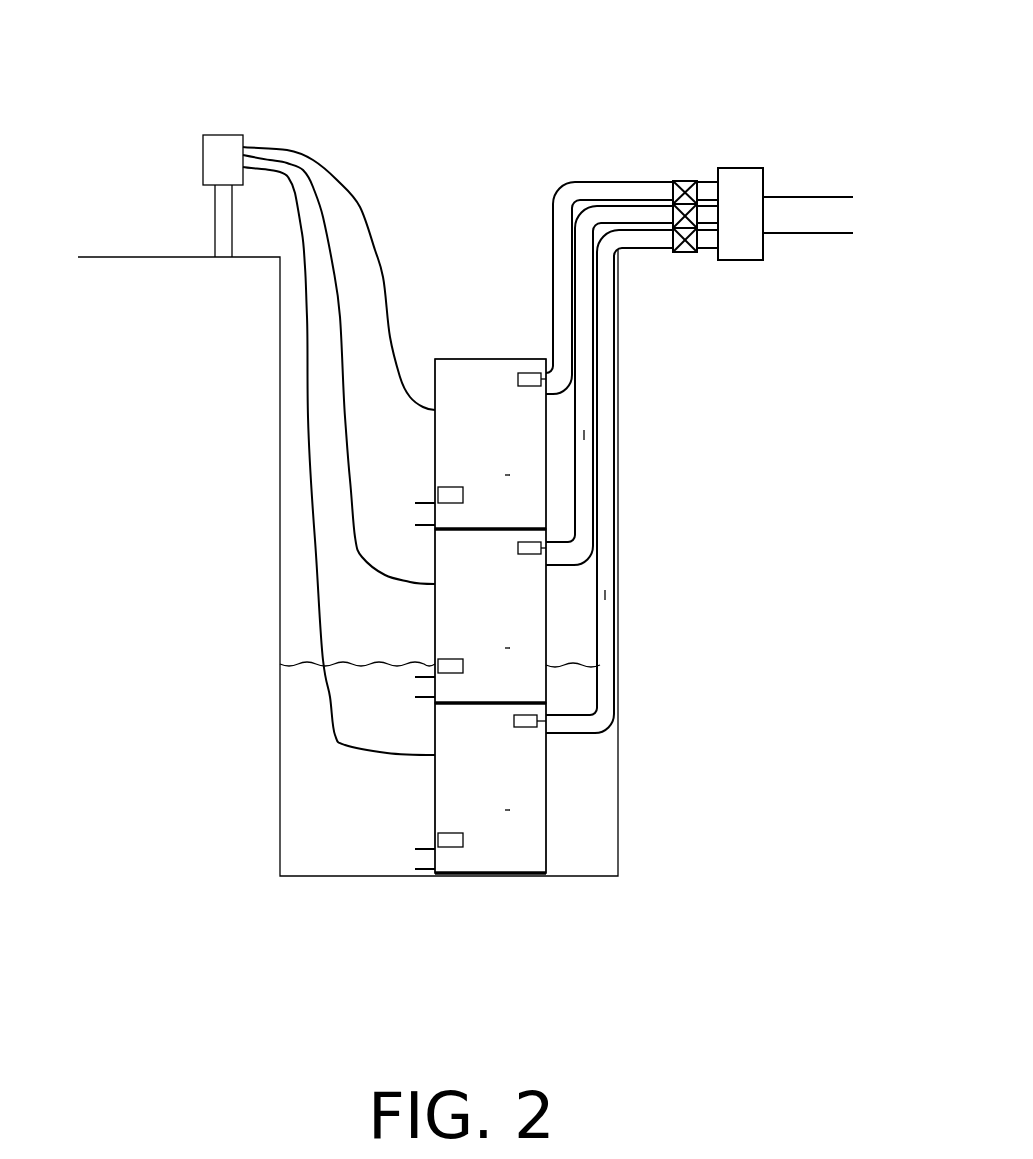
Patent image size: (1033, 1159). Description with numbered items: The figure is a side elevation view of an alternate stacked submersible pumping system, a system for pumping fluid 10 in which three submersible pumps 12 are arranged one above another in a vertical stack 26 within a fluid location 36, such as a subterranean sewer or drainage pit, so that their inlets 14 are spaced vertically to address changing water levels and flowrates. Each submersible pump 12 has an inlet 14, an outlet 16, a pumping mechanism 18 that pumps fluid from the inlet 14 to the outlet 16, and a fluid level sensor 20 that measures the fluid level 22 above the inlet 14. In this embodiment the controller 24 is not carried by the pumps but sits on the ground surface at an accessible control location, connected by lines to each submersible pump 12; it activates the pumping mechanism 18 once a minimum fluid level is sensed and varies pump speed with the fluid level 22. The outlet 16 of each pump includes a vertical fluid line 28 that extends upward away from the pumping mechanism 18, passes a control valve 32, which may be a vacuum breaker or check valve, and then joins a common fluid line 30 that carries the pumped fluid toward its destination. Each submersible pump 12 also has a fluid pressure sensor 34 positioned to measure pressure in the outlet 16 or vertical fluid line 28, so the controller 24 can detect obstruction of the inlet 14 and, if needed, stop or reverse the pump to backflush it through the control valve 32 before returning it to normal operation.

The system for pumping fluid 10 is at (320, 122).
The submersible pump 12 is at (452, 432).
The inlet 14 is at (420, 513).
The outlet 16 is at (550, 383).
The pumping mechanism 18 is at (510, 475).
The fluid level sensor 20 is at (438, 493).
The fluid level 22 is at (280, 664).
The controller 24 is at (218, 158).
The vertical stack 26 is at (490, 358).
The fluid line 28 is at (557, 253).
The common fluid line 30 is at (800, 210).
The control valve 32 is at (672, 225).
The fluid pressure sensor 34 is at (547, 378).
The fluid location 36 is at (280, 357).